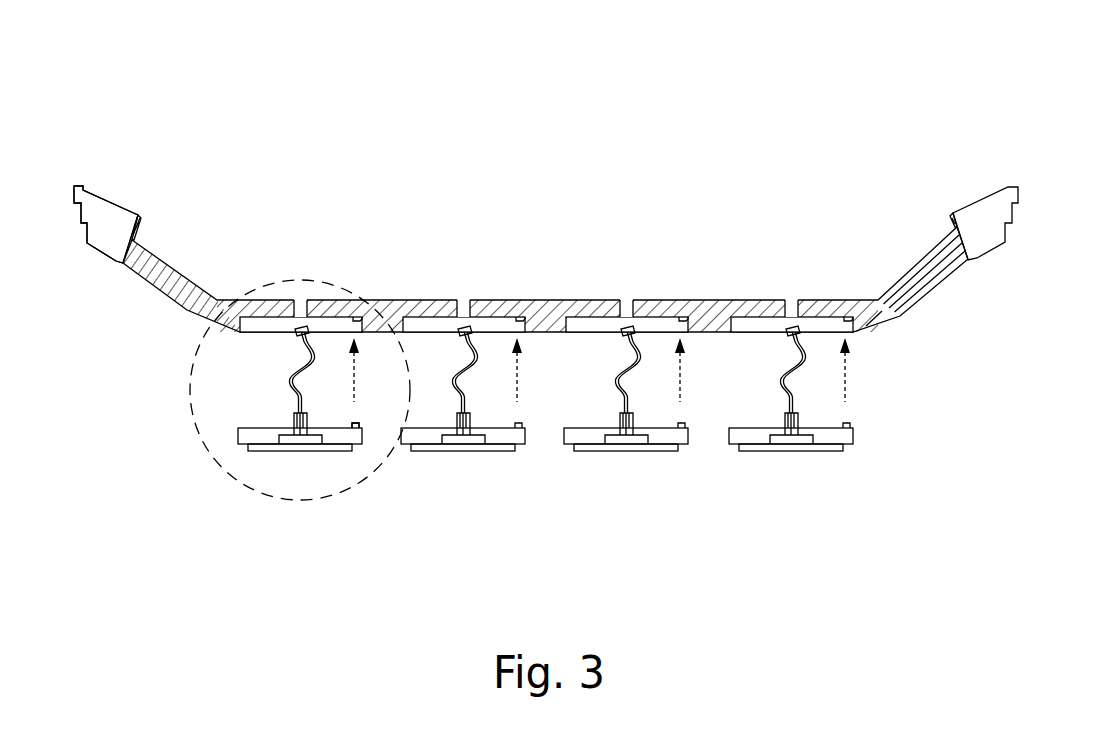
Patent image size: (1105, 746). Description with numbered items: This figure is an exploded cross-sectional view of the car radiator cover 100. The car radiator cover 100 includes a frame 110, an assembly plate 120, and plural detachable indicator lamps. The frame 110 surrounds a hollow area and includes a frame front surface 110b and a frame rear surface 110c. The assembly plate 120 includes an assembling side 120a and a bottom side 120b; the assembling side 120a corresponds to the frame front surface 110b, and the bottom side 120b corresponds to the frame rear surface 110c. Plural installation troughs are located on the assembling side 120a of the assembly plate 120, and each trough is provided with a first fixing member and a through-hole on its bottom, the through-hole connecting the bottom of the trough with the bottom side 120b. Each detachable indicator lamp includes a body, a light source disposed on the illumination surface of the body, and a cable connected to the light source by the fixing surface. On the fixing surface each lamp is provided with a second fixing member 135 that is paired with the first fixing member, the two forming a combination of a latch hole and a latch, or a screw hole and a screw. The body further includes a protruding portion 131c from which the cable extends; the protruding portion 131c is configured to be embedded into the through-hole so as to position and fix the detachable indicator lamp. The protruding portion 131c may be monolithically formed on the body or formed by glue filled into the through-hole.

The car radiator cover 100 is at (912, 174).
The frame 110 is at (997, 218).
The frame front surface 110b is at (97, 272).
The frame rear surface 110c is at (97, 160).
The assembly plate 120 is at (600, 299).
The assembling side 120a is at (153, 305).
The bottom side 120b is at (222, 290).
The protruding portion 131c is at (292, 420).
The second fixing member 135 is at (356, 423).